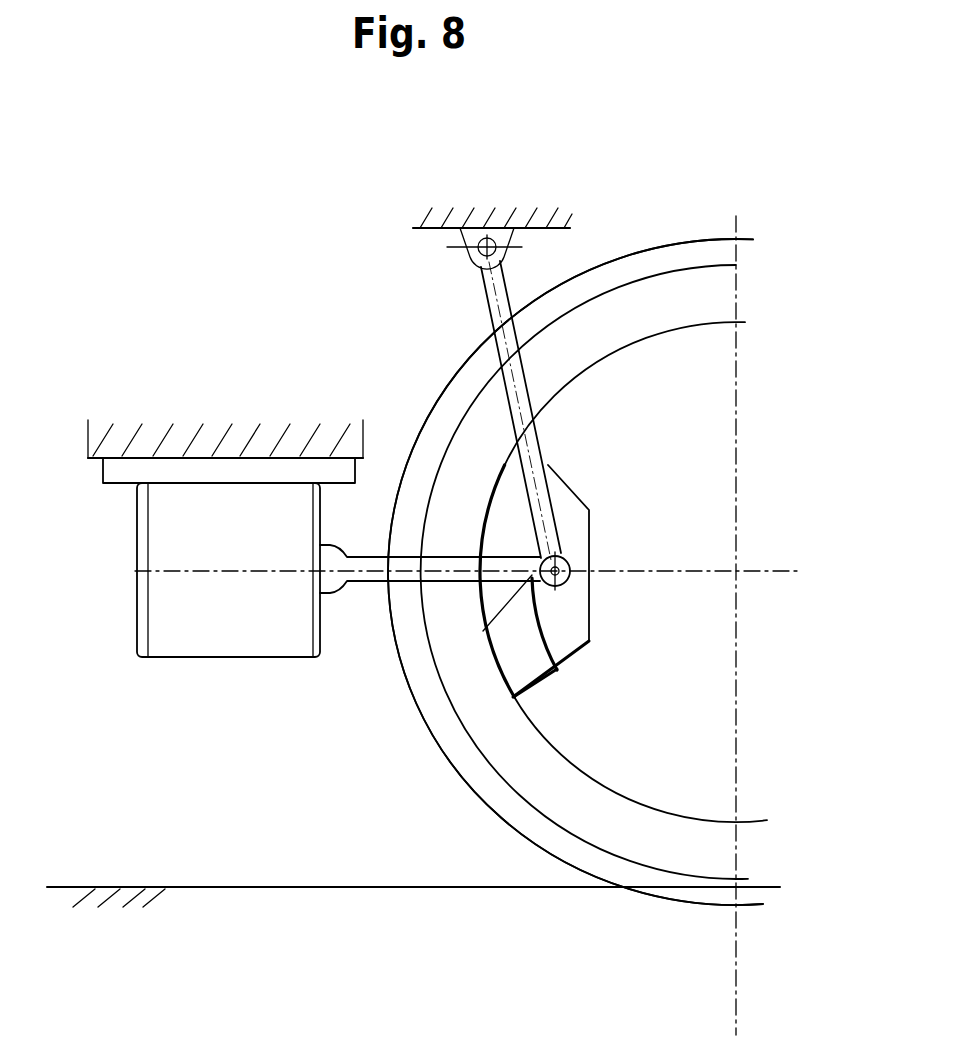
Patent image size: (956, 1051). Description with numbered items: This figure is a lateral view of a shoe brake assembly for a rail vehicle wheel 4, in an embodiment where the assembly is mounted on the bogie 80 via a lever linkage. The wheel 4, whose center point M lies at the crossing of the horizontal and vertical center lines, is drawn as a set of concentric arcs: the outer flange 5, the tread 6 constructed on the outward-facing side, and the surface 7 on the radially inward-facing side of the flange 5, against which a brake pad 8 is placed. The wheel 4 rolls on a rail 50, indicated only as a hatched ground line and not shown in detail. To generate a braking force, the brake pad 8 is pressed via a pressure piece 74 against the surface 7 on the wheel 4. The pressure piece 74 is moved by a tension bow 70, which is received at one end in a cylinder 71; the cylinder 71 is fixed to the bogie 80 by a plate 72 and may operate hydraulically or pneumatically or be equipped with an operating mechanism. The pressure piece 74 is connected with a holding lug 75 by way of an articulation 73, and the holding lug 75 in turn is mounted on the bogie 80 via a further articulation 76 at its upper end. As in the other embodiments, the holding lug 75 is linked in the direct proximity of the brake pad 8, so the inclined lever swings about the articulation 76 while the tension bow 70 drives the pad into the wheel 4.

The wheel 4 is at (777, 787).
The flange 5 is at (698, 250).
The tread 6 is at (737, 265).
The surface 7 is at (710, 323).
The brake pad 8 is at (525, 678).
The center point M is at (742, 570).
The rail 50 is at (192, 890).
The tension bow 70 is at (377, 571).
The cylinder 71 is at (258, 530).
The plate 72 is at (137, 458).
The articulation 73 is at (486, 633).
The pressure piece 74 is at (563, 628).
The holding lug 75 is at (507, 370).
The articulation 76 is at (490, 246).
The bogie 80 is at (473, 182).